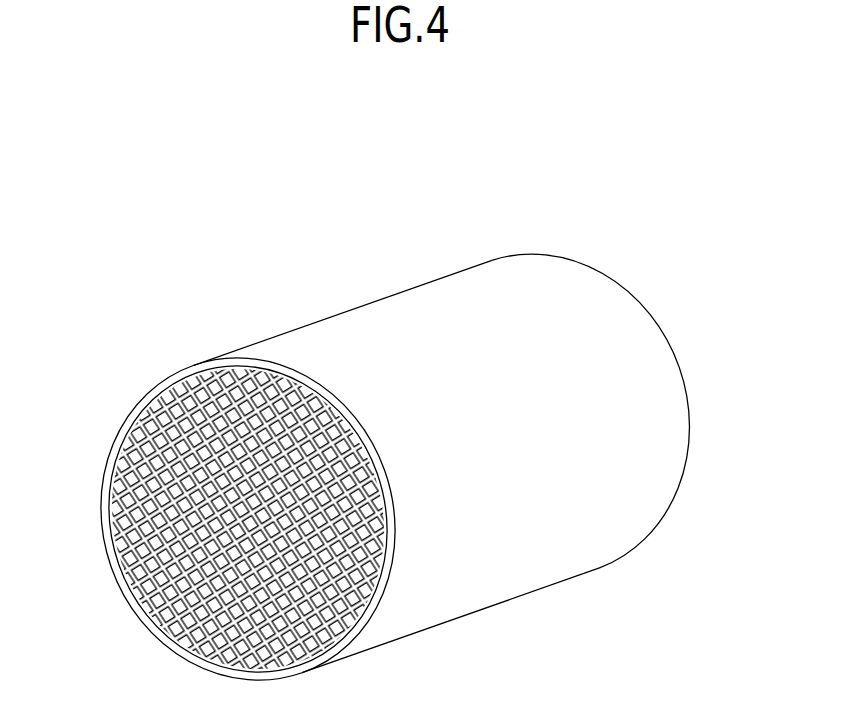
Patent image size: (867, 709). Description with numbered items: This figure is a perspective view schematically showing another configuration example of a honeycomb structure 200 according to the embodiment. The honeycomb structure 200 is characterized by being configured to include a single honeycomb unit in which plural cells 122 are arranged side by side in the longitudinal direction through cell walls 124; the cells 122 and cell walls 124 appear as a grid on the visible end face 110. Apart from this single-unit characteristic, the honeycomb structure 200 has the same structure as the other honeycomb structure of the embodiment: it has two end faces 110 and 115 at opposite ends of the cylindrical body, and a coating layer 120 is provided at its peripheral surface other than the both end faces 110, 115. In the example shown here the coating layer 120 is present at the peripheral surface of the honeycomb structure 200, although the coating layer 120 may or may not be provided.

The honeycomb structure 200 is at (330, 295).
The end face 110 is at (91, 428).
The end face 115 is at (706, 340).
The coating layer 120 is at (500, 577).
The cells 122 is at (328, 594).
The cell walls 124 is at (232, 595).